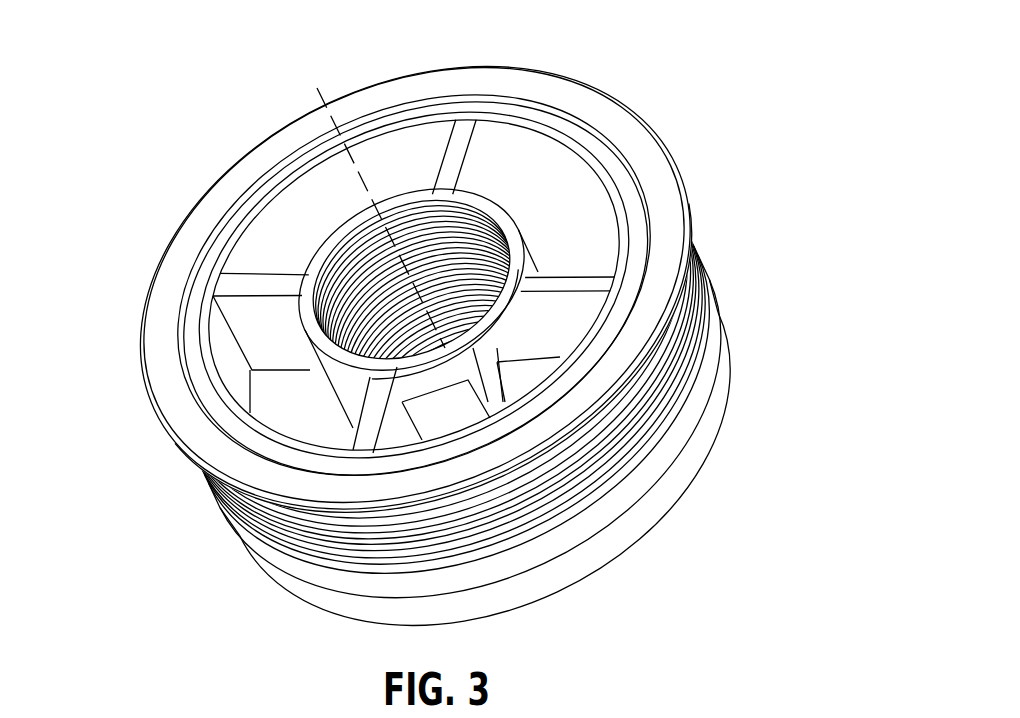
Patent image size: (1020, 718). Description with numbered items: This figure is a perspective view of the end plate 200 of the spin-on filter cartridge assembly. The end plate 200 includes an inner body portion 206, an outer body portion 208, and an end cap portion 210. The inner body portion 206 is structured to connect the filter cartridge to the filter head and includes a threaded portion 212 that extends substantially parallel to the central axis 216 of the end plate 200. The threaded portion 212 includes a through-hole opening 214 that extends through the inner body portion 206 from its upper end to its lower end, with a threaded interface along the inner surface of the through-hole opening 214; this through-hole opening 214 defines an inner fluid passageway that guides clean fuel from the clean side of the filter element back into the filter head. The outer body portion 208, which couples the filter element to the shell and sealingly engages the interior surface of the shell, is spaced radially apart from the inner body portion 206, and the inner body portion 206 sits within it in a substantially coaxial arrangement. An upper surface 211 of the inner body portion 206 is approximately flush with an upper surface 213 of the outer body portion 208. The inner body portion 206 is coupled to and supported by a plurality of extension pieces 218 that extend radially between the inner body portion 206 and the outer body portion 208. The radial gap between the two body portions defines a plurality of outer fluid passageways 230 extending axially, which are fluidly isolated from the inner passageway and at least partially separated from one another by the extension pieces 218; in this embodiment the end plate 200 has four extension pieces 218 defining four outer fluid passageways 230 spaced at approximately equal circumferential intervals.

The end plate 200 is at (792, 441).
The inner body portion 206 is at (522, 209).
The outer body portion 208 is at (592, 102).
The end cap portion 210 is at (722, 357).
The upper surface of the inner body portion 211 is at (513, 213).
The threaded portion 212 is at (345, 276).
The upper surface of the outer body portion 213 is at (600, 382).
The through-hole opening 214 is at (315, 316).
The central axis 216 is at (316, 89).
The extension pieces 218 is at (365, 437).
The outer fluid passageways 230 is at (586, 236).